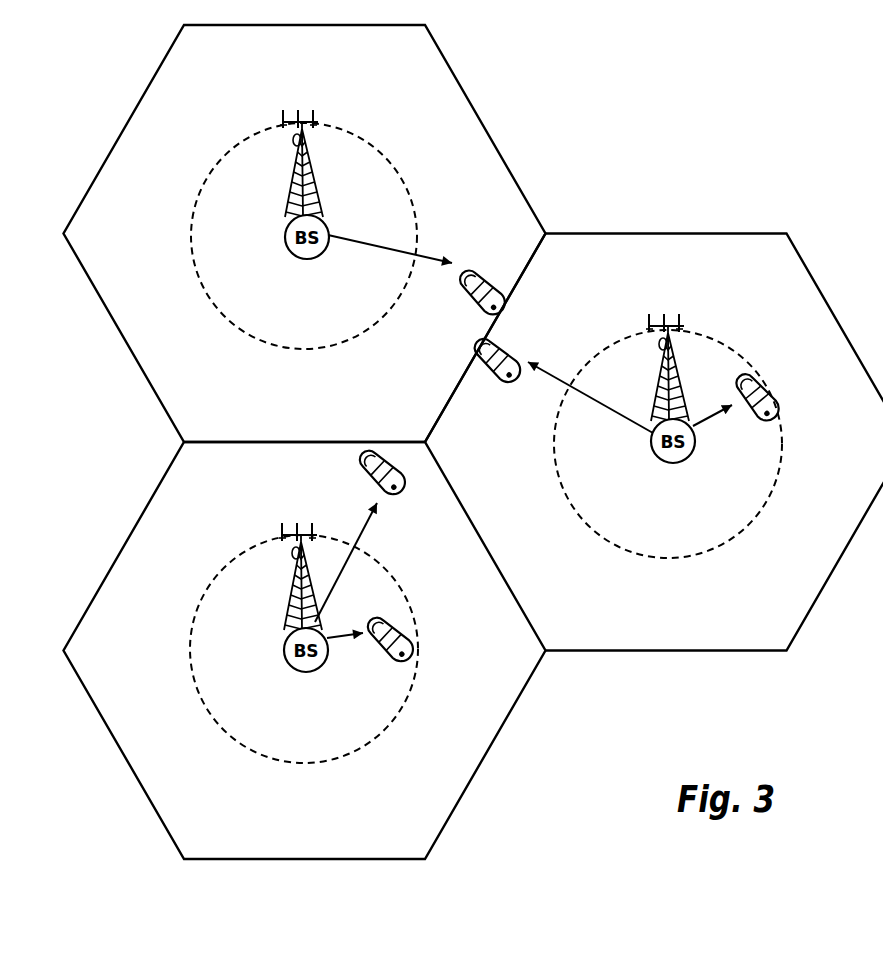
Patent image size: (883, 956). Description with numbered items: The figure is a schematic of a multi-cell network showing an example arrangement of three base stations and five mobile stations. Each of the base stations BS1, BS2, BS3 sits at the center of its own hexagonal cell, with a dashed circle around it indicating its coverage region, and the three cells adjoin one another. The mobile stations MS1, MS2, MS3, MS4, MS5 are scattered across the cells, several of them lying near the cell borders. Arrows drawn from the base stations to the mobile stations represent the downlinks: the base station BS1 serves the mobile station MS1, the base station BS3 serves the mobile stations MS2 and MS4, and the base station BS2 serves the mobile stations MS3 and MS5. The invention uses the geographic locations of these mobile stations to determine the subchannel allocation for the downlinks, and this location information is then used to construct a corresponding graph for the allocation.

The base station BS1 is at (304, 229).
The base station BS2 is at (304, 643).
The base station BS3 is at (668, 436).
The mobile station MS1 is at (481, 266).
The mobile station MS2 is at (772, 424).
The mobile station MS3 is at (405, 666).
The mobile station MS4 is at (498, 391).
The mobile station MS5 is at (384, 450).